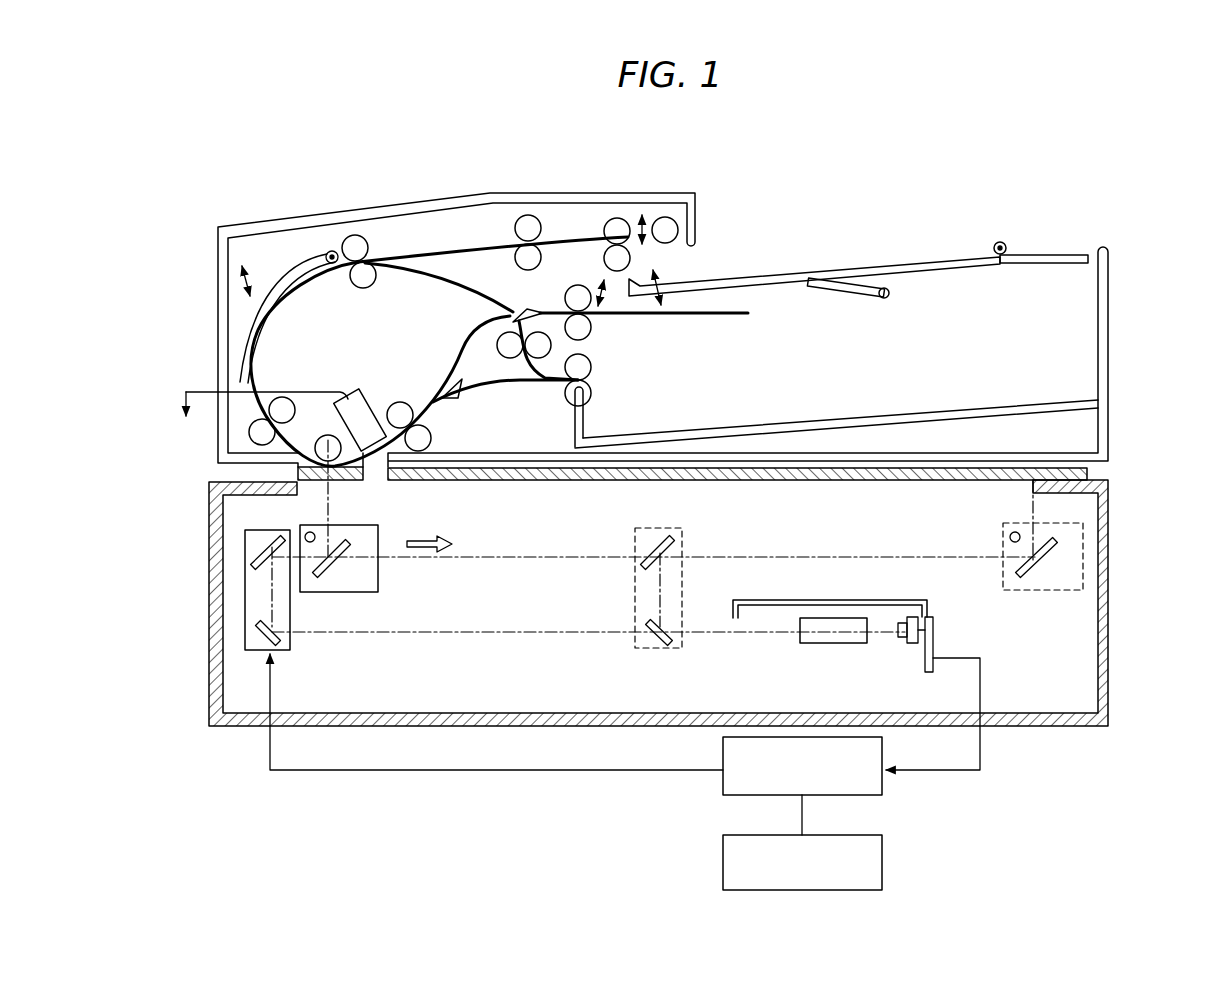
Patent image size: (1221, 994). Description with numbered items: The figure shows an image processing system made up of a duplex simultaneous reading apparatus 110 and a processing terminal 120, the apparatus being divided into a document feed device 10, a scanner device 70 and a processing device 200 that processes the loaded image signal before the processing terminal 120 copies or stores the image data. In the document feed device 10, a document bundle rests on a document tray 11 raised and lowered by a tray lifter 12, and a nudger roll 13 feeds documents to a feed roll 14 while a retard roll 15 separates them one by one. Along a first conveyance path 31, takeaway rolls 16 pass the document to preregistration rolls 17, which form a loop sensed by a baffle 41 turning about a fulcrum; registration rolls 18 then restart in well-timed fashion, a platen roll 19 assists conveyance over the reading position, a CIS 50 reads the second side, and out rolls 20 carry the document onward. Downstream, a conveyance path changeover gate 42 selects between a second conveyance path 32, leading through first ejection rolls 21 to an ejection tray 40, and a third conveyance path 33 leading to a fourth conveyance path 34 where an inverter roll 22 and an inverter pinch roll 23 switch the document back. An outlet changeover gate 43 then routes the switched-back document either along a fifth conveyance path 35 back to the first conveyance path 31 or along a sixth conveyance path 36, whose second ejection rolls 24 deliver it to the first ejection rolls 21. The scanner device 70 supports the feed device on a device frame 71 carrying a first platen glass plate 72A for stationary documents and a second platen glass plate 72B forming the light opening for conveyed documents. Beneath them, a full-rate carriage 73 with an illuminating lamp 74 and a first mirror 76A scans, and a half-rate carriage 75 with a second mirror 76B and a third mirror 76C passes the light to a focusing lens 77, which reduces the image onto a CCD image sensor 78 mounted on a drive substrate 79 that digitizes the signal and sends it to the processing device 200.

The document feed device 10 is at (857, 214).
The document tray 11 is at (783, 272).
The tray lifter 12 is at (846, 299).
The nudger roll 13 is at (680, 232).
The feed roll 14 is at (617, 215).
The retard roll 15 is at (632, 259).
The takeaway rolls 16 is at (528, 212).
The preregistration rolls 17 is at (362, 291).
The registration rolls 18 is at (282, 394).
The platen roll 19 is at (327, 434).
The out rolls 20 is at (409, 401).
The first ejection rolls 21 is at (602, 372).
The inverter roll 22 is at (592, 328).
The inverter pinch roll 23 is at (578, 286).
The second ejection rolls 24 is at (508, 331).
The first conveyance path 31 is at (443, 250).
The second conveyance path 32 is at (527, 386).
The third conveyance path 33 is at (470, 329).
The fourth conveyance path 34 is at (709, 316).
The fifth conveyance path 35 is at (427, 271).
The sixth conveyance path 36 is at (525, 363).
The ejection tray 40 is at (898, 415).
The baffle 41 is at (282, 272).
The conveyance path changeover gate 42 is at (460, 402).
The outlet changeover gate 43 is at (537, 311).
The CIS 50 is at (372, 400).
The scanner device 70 is at (1060, 766).
The device frame 71 is at (1005, 727).
The first platen glass plate 72A is at (826, 482).
The second platen glass plate 72B is at (345, 483).
The full-rate carriage 73 is at (378, 580).
The illuminating lamp 74 is at (300, 524).
The half-rate carriage 75 is at (245, 594).
The first mirror 76A is at (330, 572).
The second mirror 76B is at (257, 550).
The third mirror 76C is at (258, 633).
The focusing lens 77 is at (833, 645).
The CCD image sensor 78 is at (912, 645).
The drive substrate 79 is at (934, 633).
The duplex simultaneous reading apparatus 110 is at (1144, 458).
The processing terminal 120 is at (897, 860).
The processing device 200 is at (722, 785).